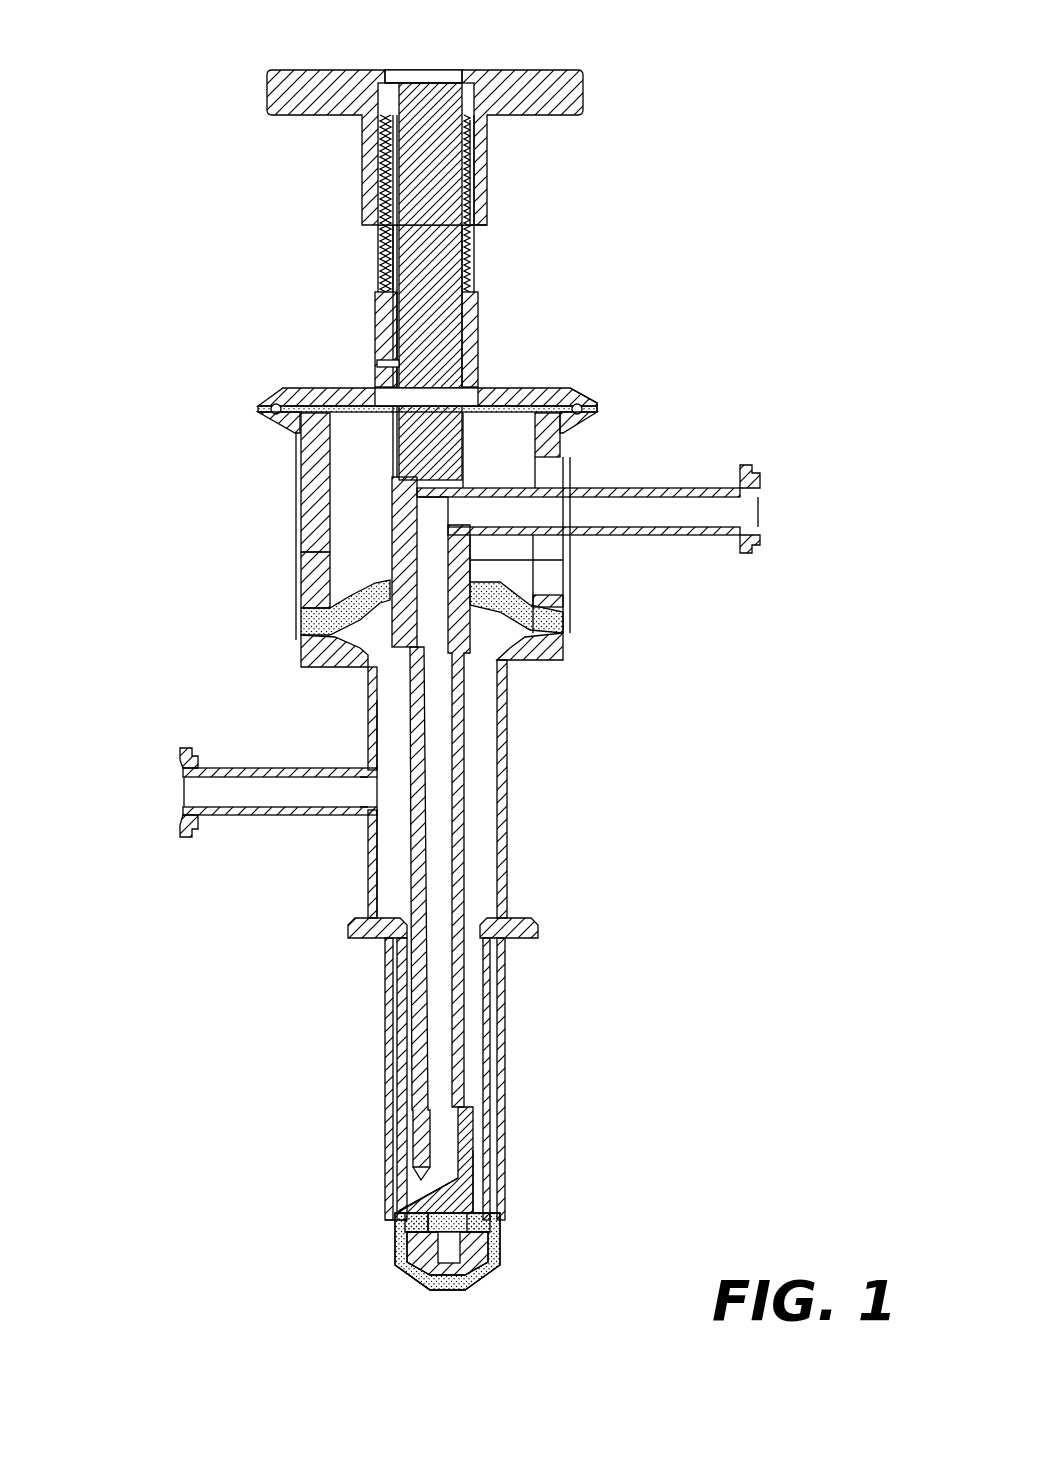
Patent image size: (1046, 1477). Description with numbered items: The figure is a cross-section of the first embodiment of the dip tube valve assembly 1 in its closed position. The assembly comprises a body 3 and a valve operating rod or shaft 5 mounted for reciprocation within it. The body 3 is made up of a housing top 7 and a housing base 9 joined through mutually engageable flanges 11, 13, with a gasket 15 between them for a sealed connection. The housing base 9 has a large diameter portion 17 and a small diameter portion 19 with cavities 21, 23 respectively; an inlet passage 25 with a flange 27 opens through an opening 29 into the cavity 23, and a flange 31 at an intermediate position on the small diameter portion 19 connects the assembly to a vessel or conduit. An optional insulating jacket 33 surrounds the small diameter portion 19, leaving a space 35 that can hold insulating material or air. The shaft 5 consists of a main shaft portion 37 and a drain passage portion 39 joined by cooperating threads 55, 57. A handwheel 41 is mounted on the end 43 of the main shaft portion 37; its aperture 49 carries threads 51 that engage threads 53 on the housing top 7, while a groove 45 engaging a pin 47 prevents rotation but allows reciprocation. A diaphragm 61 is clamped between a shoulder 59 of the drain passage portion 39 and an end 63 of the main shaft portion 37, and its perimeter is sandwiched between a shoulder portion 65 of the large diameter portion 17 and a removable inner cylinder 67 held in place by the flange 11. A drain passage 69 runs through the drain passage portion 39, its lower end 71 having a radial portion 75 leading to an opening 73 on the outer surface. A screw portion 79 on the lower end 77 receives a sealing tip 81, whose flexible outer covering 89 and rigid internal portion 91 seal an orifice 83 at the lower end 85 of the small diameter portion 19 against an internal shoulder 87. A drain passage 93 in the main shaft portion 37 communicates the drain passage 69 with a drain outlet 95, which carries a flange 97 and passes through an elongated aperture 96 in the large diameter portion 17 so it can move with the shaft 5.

The dip tube valve assembly 1 is at (150, 175).
The body 3 is at (568, 657).
The valve operating rod or shaft 5 is at (455, 250).
The housing top 7 is at (523, 385).
The housing base 9 is at (510, 765).
The flange 11 is at (603, 389).
The flange 13 is at (600, 414).
The gasket 15 is at (262, 408).
The large diameter portion 17 is at (308, 541).
The small diameter portion 19 is at (368, 701).
The cavity 21 is at (484, 455).
The cavity 23 is at (378, 735).
The inlet passage 25 is at (326, 796).
The flange 27 is at (182, 829).
The opening 29 is at (377, 792).
The flange 31 is at (546, 936).
The insulating jacket 33 is at (382, 995).
The space 35 is at (396, 1076).
The main shaft portion 37 is at (465, 304).
The drain passage portion 39 is at (413, 866).
The handwheel 41 is at (573, 68).
The end 43 is at (432, 82).
The groove 45 is at (394, 283).
The pin 47 is at (386, 363).
The aperture 49 is at (488, 141).
The threads 51 is at (480, 167).
The threads 53 is at (378, 243).
The threads 55 is at (540, 561).
The threads 57 is at (572, 558).
The shoulder 59 is at (482, 624).
The diaphragm 61 is at (320, 626).
The end 63 is at (540, 592).
The shoulder portion 65 is at (321, 640).
The inner cylinder 67 is at (313, 441).
The drain passage 69 is at (447, 959).
The lower end 71 is at (455, 1150).
The opening 73 is at (414, 1205).
The radial portion 75 is at (420, 1178).
The lower end 77 is at (478, 1200).
The screw portion 79 is at (462, 1241).
The sealing tip 81 is at (482, 1288).
The orifice 83 is at (425, 1232).
The lower end 85 is at (500, 1233).
The internal shoulder 87 is at (408, 1216).
The flexible outer covering 89 is at (430, 1278).
The rigid internal portion 91 is at (405, 1256).
The drain passage 93 is at (435, 521).
The drain outlet 95 is at (605, 513).
The aperture 96 is at (570, 489).
The flange 97 is at (760, 526).